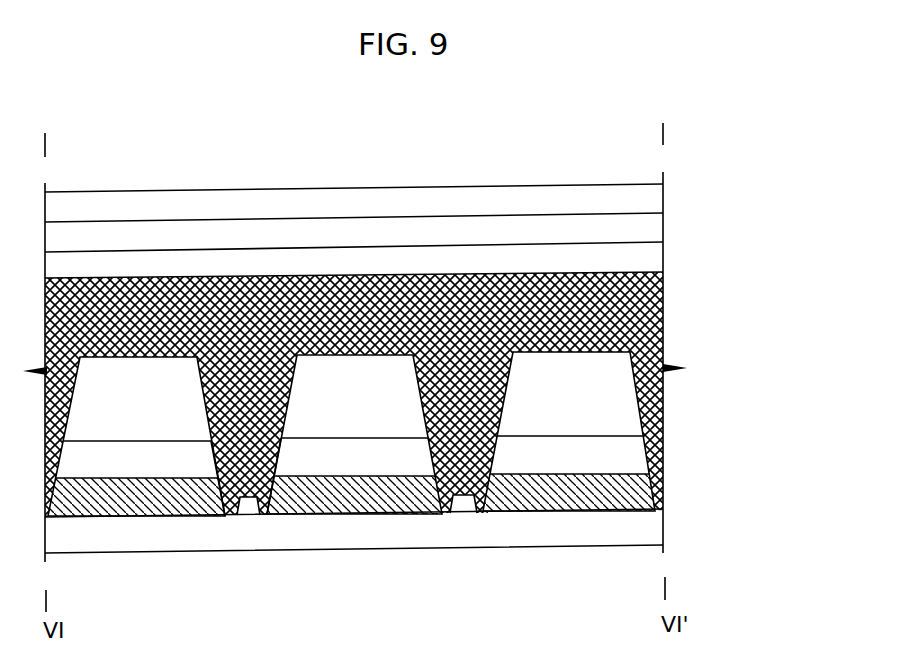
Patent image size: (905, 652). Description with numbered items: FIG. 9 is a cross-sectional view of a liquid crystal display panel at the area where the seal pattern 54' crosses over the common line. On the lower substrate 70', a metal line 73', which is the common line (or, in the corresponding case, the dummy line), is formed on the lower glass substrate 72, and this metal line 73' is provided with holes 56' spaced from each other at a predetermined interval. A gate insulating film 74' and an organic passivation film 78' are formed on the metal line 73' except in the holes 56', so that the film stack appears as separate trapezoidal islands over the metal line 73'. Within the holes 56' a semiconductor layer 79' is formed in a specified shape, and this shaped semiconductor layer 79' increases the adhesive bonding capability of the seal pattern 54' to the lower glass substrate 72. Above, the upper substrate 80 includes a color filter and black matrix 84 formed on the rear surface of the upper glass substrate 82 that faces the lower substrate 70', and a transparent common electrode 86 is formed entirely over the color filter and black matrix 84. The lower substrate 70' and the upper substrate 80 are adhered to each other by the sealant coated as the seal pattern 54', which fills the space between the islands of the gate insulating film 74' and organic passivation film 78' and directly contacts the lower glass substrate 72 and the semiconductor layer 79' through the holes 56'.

The upper substrate 80 is at (429, 222).
The upper glass substrate 82 is at (663, 198).
The color filter and black matrix 84 is at (663, 227).
The transparent common electrode 86 is at (663, 256).
The seal pattern 54' is at (405, 394).
The lower substrate 70' is at (454, 452).
The organic passivation film 78' is at (414, 434).
The gate insulating film 74' is at (425, 447).
The metal line 73' is at (421, 492).
The glass substrate 72 is at (404, 531).
The holes 56' is at (207, 528).
The semiconductor layer 79' is at (352, 558).